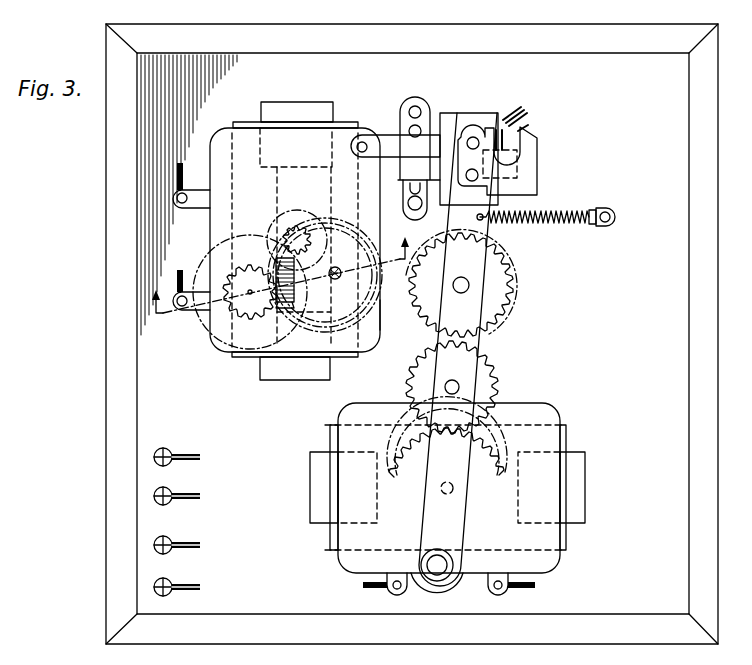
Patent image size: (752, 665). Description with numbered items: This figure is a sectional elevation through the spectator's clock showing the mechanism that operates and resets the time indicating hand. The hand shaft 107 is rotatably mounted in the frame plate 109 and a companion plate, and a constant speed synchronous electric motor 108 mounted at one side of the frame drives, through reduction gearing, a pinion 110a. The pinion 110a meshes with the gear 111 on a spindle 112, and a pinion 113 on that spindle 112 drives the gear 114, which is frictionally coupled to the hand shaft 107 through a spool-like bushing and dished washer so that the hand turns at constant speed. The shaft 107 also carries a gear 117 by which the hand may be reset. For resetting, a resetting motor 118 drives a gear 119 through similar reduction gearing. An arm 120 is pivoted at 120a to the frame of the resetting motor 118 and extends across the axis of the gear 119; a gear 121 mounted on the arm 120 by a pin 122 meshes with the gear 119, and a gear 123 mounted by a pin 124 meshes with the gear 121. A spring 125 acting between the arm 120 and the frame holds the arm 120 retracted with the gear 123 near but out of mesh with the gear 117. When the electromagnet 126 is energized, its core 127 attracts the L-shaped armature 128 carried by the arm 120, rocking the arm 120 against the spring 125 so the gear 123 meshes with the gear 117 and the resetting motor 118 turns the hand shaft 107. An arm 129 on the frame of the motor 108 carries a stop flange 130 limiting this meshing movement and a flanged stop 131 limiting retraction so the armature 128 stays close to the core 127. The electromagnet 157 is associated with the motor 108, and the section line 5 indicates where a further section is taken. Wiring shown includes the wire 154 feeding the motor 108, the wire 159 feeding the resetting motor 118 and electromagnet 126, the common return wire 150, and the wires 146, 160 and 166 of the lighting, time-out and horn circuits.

The section line 5 is at (283, 282).
The hand shaft 107 is at (333, 279).
The constant speed electric motor 108 is at (284, 372).
The frame plate 109 is at (243, 128).
The pinion 110a is at (312, 237).
The gear 111 is at (276, 228).
The spindle 112 is at (250, 292).
The pinion 113 is at (283, 305).
The gear 114 is at (288, 305).
The gear 117 is at (372, 320).
The resetting motor 118 is at (573, 465).
The gear 119 is at (483, 453).
The arm 120 is at (457, 417).
The pivot 120a is at (437, 568).
The gear 121 is at (483, 352).
The pin 122 is at (457, 383).
The gear 123 is at (519, 292).
The pin 124 is at (469, 283).
The spring 125 is at (561, 210).
The electromagnet 126 is at (458, 114).
The core 127 is at (513, 147).
The L-shaped armature 128 is at (543, 175).
The arm 129 is at (388, 135).
The stop flange 130 is at (447, 123).
The flanged stop 131 is at (503, 141).
The wire 146 is at (200, 590).
The common return wire 150 is at (199, 254).
The wire 154 is at (178, 177).
The electromagnet 157 is at (277, 200).
The wire 159 is at (503, 112).
The wire 160 is at (200, 499).
The wire 166 is at (200, 460).